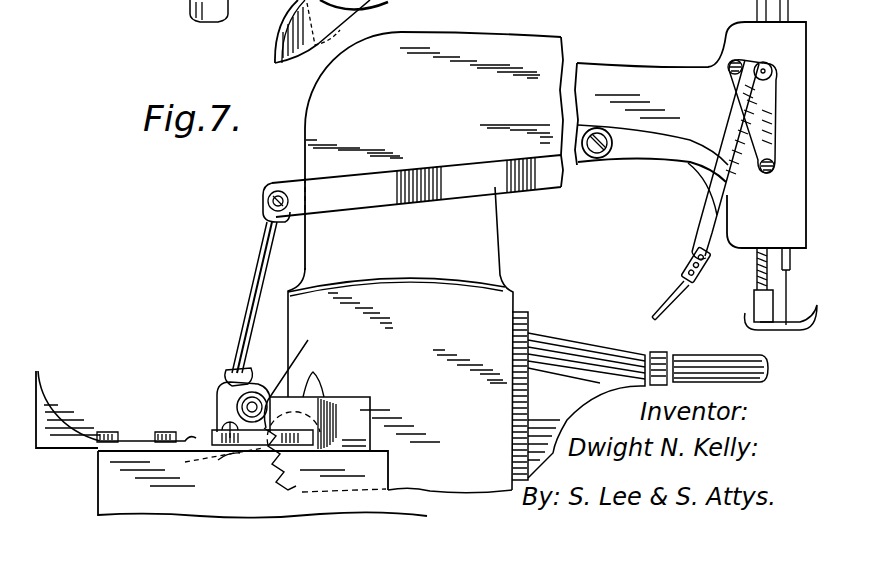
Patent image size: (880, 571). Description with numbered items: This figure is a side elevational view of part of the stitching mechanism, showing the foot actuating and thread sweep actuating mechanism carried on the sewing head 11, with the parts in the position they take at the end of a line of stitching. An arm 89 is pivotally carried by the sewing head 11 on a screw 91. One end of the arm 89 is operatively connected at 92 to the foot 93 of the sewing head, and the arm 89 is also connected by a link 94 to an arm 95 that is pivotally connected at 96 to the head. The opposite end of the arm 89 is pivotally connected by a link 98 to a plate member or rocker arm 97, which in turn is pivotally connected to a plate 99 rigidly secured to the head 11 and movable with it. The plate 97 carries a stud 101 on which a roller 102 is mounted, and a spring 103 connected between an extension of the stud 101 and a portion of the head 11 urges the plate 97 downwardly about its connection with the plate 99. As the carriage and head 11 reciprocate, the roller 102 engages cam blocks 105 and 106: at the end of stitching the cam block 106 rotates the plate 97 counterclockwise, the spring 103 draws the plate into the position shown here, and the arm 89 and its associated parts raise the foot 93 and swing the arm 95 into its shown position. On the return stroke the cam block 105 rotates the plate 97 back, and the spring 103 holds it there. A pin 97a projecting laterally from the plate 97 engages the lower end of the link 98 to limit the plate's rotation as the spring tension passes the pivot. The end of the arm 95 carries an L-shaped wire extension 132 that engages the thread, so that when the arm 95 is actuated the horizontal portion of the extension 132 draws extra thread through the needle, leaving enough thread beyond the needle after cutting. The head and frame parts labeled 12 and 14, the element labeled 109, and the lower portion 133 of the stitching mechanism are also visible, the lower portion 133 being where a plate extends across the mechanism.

The sewing head 11 is at (296, 137).
The sewing machine head frame 12 is at (722, 36).
The cap 14 is at (273, 28).
The arm 89 is at (422, 160).
The screw 91 is at (597, 160).
The operative connection 92 is at (766, 264).
The foot 93 is at (753, 306).
The link 94 is at (740, 97).
The arm 95 is at (770, 95).
The pivotal connection 96 is at (765, 61).
The plate member or rocker arm 97 is at (297, 371).
The pin 97a is at (215, 464).
The link 98 is at (255, 270).
The plate 99 is at (348, 398).
The stud 101 is at (236, 400).
The roller 102 is at (246, 374).
The spring 103 is at (208, 480).
The cam block 105 is at (63, 413).
The cam block 106 is at (318, 395).
The block part 109 is at (348, 429).
The L-shaped wire extension 132 is at (668, 294).
The lower portion 133 is at (742, 358).